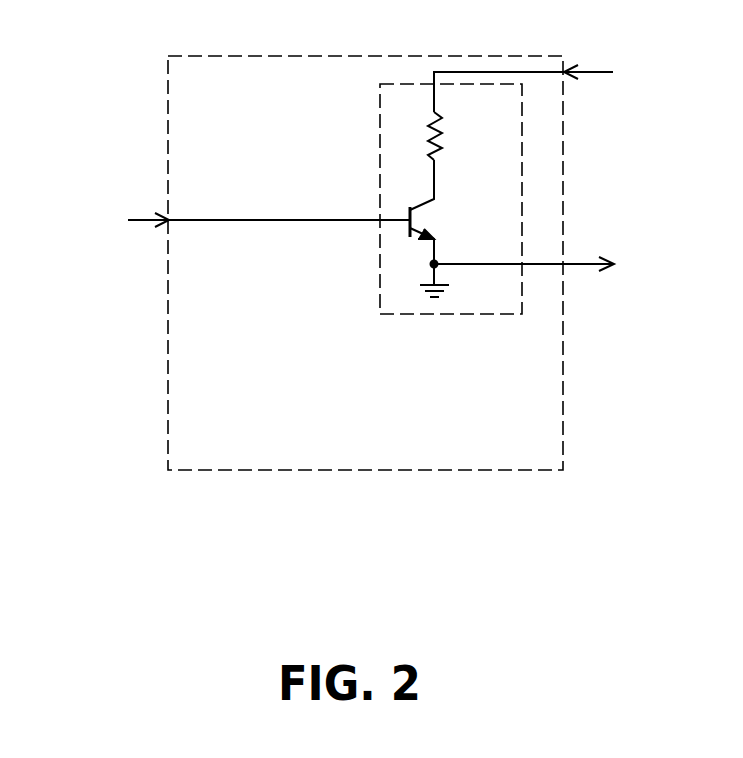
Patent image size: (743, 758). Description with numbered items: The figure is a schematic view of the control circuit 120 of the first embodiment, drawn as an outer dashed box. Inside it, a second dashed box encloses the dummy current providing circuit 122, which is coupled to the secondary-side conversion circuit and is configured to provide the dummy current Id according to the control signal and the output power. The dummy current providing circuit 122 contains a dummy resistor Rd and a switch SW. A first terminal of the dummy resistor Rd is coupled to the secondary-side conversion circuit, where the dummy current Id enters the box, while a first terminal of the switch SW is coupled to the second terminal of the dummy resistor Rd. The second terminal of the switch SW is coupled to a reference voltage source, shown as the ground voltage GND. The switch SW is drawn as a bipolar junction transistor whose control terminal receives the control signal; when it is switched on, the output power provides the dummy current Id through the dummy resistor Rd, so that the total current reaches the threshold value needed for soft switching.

The control circuit 120 is at (283, 55).
The dummy current providing circuit 122 is at (380, 137).
The dummy resistor Rd is at (455, 136).
The switch SW is at (449, 212).
The dummy current Id is at (539, 82).
The ground voltage GND is at (546, 269).